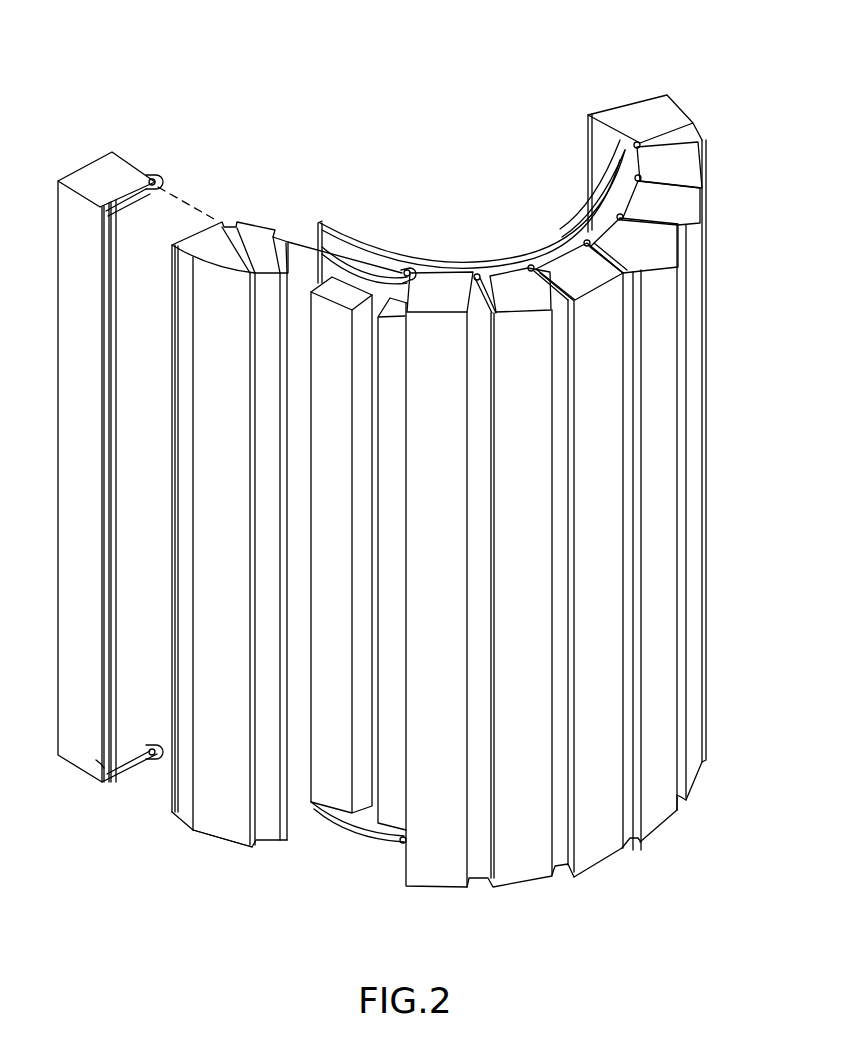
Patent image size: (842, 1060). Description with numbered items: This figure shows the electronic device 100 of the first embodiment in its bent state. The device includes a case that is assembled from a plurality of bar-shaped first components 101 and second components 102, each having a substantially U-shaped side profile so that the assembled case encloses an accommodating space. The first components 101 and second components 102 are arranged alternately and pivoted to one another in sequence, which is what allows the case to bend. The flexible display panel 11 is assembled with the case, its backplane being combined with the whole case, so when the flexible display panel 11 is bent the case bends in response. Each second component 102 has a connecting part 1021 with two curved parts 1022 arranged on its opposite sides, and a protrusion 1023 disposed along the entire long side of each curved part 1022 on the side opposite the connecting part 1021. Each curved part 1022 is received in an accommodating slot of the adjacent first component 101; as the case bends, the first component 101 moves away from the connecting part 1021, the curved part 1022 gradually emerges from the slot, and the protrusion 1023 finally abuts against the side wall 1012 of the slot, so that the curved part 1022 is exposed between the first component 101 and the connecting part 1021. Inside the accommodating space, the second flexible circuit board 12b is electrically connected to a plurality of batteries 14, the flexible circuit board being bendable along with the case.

The electronic device 100 is at (462, 90).
The flexible display panel 11 is at (598, 170).
The first component 101 is at (117, 176).
The second component 102 is at (247, 233).
The side wall 1012 is at (98, 764).
The connecting part 1021 is at (225, 820).
The curved part 1022 is at (183, 812).
The protrusion 1023 is at (170, 793).
The battery 14 is at (332, 800).
The second flexible circuit board 12b is at (370, 812).